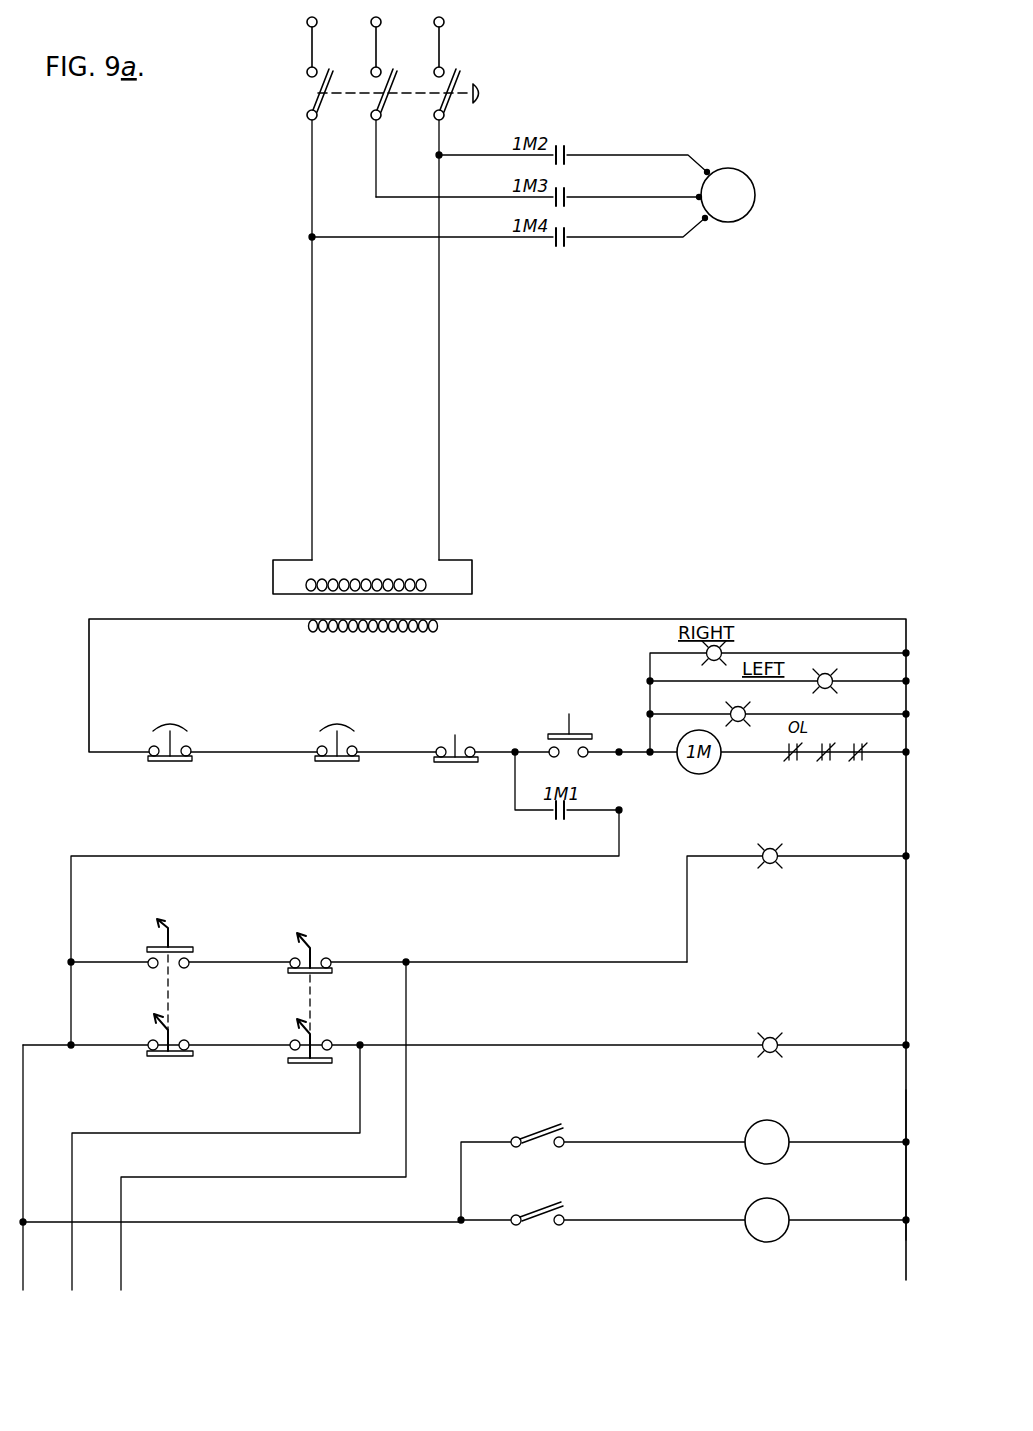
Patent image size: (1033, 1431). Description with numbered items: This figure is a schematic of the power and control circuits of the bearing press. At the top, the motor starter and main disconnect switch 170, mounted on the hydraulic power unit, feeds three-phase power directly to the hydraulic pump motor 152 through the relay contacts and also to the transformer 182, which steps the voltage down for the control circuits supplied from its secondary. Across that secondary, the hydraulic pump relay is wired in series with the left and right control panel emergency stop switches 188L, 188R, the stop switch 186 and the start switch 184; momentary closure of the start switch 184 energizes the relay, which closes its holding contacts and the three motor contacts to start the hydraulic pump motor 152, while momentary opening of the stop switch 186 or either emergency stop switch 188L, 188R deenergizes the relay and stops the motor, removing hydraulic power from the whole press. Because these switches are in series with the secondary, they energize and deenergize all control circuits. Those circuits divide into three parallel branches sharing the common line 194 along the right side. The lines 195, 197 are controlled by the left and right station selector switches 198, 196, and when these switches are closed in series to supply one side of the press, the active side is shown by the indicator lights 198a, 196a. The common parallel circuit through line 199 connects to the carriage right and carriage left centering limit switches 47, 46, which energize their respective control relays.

The motor starter and main disconnect switch 170 is at (458, 80).
The hydraulic pump motor 152 is at (786, 197).
The transformer 182 is at (459, 612).
The left control panel emergency stop switch 188L is at (180, 760).
The right control panel emergency stop switch 188R is at (348, 760).
The stop switch 186 is at (458, 766).
The start switch 184 is at (558, 730).
The indicator light 198a is at (776, 868).
The indicator light 196a is at (770, 1058).
The left station active manual control selector switch 198 is at (176, 948).
The right station active manual control selector switch 196 is at (313, 961).
The line 199 is at (24, 1122).
The line 197 is at (357, 1096).
The line 195 is at (407, 1013).
The common line 194 is at (906, 1100).
The centering limit switch 47 is at (532, 1134).
The centering limit switch 46 is at (542, 1210).